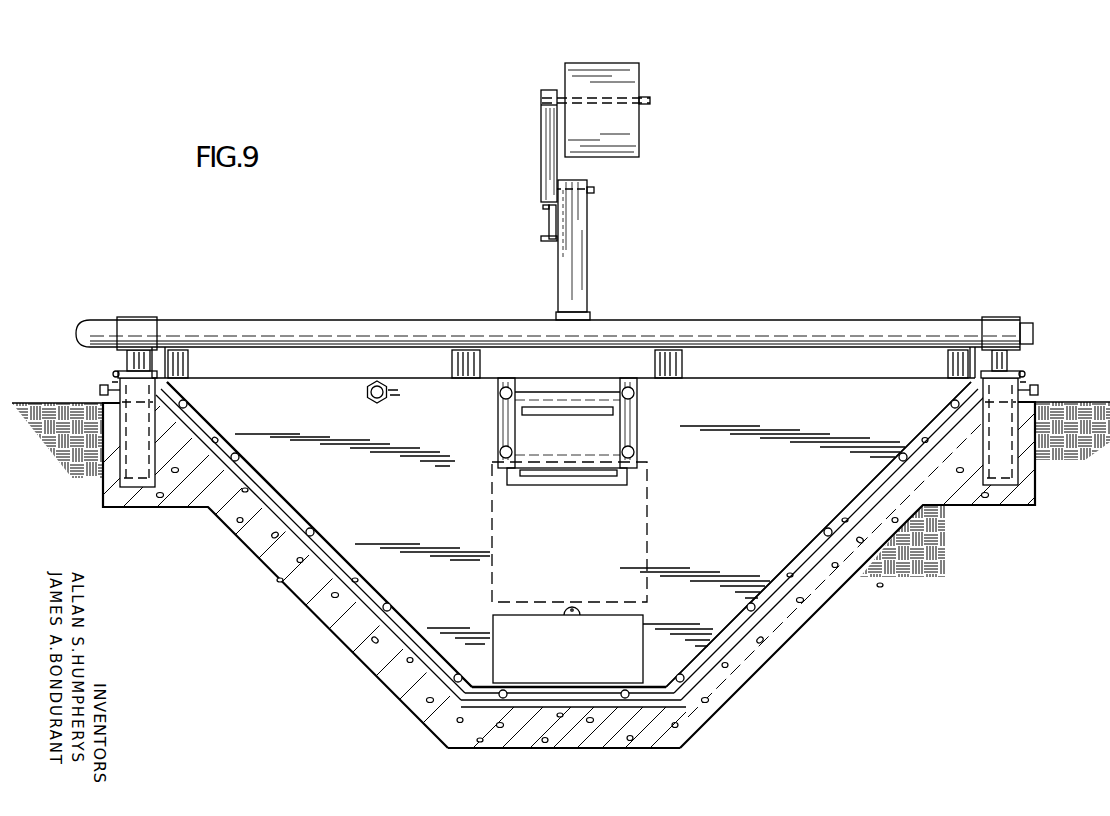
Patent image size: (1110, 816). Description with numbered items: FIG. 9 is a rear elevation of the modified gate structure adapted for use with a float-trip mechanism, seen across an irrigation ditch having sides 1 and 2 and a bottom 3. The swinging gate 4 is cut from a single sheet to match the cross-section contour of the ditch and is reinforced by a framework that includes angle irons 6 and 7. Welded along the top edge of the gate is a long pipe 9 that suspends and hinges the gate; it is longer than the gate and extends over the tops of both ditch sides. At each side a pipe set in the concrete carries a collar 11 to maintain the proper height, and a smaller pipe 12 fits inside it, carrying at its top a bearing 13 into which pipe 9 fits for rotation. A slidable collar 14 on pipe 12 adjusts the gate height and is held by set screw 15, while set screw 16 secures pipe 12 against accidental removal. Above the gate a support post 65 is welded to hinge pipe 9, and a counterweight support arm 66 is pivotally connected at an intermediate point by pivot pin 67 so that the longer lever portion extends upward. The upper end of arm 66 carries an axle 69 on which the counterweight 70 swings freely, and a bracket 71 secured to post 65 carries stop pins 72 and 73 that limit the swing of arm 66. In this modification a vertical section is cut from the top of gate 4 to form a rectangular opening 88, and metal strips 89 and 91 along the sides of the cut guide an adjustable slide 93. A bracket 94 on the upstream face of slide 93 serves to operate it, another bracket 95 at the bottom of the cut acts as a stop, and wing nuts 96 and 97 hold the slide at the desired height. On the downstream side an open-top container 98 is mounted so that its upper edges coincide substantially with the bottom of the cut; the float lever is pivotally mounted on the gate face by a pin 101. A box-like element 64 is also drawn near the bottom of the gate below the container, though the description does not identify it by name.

The ditch side 1 is at (780, 642).
The ditch side 2 is at (270, 585).
The ditch bottom 3 is at (583, 758).
The swinging gate 4 is at (445, 456).
The angle iron 6 is at (680, 362).
The angle iron 7 is at (456, 362).
The pipe 9 is at (906, 323).
The collar 11 is at (122, 401).
The pipe 12 is at (127, 357).
The bearing 13 is at (147, 318).
The collar 14 is at (113, 373).
The set screw 15 is at (116, 378).
The set screw 16 is at (100, 390).
The weight box 64 is at (638, 673).
The support post 65 is at (559, 268).
The counterweight support arm 66 is at (541, 134).
The pivot pin 67 is at (596, 191).
The axle 69 is at (652, 103).
The counterweight 70 is at (598, 78).
The bracket 71 is at (549, 224).
The stop pin 72 is at (543, 208).
The stop pin 73 is at (541, 240).
The rectangular opening 88 is at (592, 396).
The metal strip 89 is at (499, 430).
The metal strip 91 is at (632, 430).
The adjustable slide 93 is at (553, 392).
The bracket 94 is at (598, 419).
The bracket 95 is at (628, 479).
The wing nut 96 is at (499, 396).
The wing nut 97 is at (636, 396).
The open-top container 98 is at (648, 548).
The pin 101 is at (377, 381).